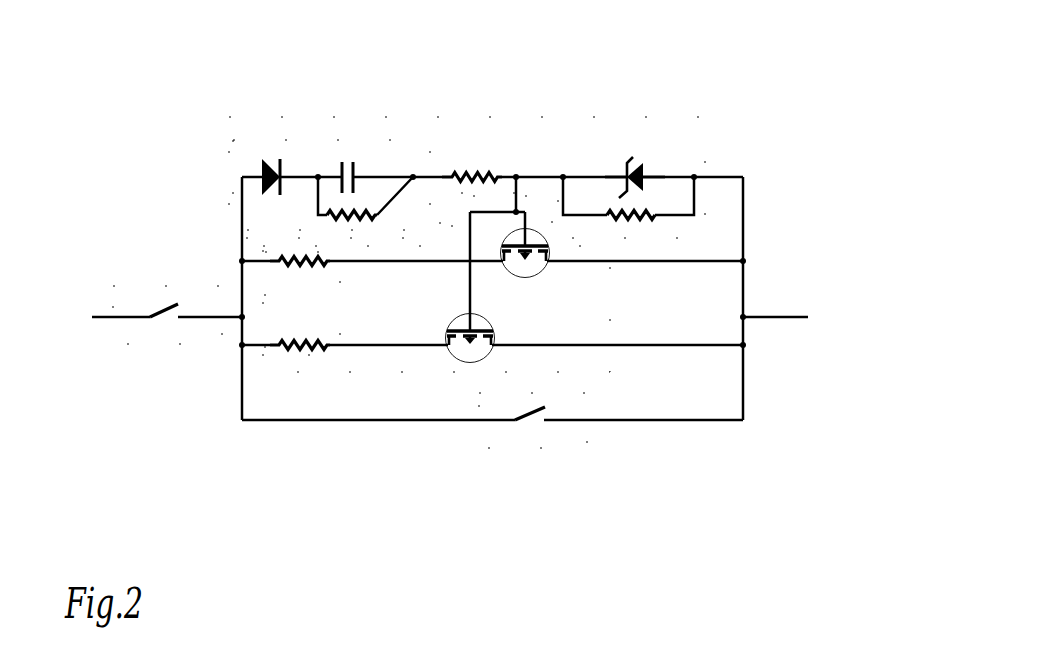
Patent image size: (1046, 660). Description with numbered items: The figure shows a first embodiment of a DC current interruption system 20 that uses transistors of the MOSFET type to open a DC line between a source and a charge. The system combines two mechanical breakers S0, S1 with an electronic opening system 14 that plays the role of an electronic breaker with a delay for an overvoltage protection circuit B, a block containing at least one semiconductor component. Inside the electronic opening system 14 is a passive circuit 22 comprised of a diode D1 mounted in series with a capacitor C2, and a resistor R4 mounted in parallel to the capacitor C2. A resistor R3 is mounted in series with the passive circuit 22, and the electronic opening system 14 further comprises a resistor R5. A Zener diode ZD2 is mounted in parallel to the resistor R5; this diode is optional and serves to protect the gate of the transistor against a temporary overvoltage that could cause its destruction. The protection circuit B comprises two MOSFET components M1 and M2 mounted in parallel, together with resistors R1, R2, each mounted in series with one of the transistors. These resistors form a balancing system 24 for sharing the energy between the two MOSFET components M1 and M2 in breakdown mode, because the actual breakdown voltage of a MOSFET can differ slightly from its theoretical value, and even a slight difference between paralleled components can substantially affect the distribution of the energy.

The electronic opening system 14 is at (529, 117).
The DC current interruption system 20 is at (792, 116).
The passive circuit 22 is at (430, 158).
The balancing system 24 is at (340, 307).
The overvoltage protection circuit B is at (610, 318).
The diode D1 is at (272, 190).
The capacitor C2 is at (336, 168).
The resistor R1 is at (300, 332).
The resistor R2 is at (300, 275).
The resistor R3 is at (472, 164).
The resistor R4 is at (352, 203).
The resistor R5 is at (638, 204).
The Zener diode ZD2 is at (639, 167).
The MOSFET component M1 is at (453, 320).
The MOSFET component M2 is at (536, 274).
The mechanical breaker S0 is at (553, 448).
The mechanical breaker S1 is at (143, 344).